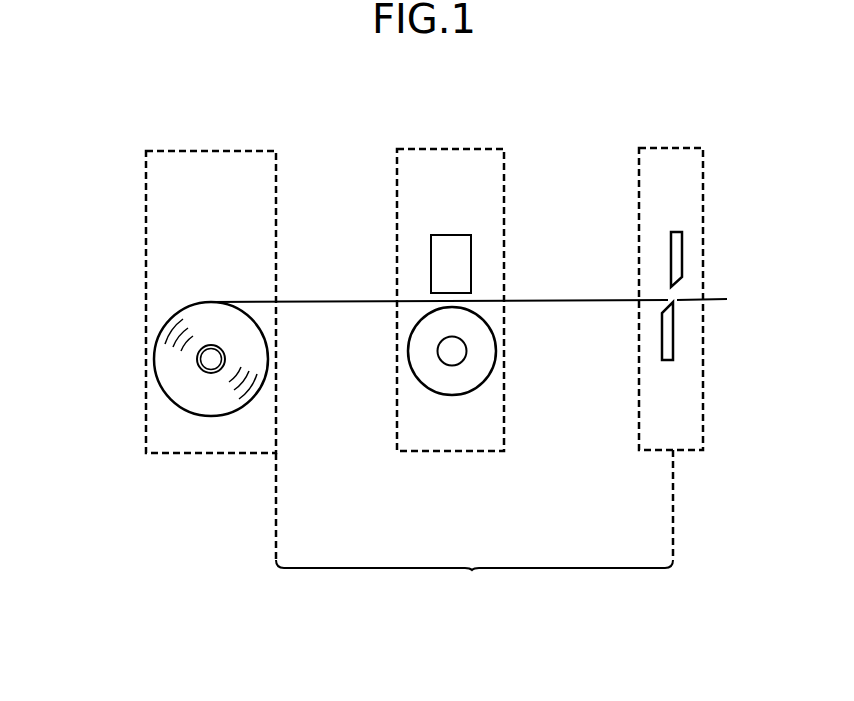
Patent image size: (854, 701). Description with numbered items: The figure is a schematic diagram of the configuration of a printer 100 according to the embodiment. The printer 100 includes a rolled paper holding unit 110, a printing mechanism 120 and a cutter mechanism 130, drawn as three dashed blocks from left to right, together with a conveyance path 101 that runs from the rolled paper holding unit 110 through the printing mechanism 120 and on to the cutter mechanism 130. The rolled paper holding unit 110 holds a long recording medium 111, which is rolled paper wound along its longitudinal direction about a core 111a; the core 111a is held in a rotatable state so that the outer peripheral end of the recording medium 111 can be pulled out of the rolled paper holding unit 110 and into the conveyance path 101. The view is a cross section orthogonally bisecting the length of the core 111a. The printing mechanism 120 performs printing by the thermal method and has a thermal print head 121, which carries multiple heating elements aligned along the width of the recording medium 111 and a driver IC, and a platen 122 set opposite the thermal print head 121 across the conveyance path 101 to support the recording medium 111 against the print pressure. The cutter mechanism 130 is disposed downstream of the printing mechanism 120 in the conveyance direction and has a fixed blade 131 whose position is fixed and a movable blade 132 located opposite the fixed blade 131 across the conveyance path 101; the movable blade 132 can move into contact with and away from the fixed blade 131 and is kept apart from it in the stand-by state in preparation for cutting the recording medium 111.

The printer 100 is at (578, 92).
The conveyance path 101 is at (472, 570).
The rolled paper holding unit 110 is at (209, 151).
The recording medium 111 is at (172, 337).
The core 111a is at (206, 371).
The printing mechanism 120 is at (444, 149).
The thermal print head 121 is at (471, 262).
The platen 122 is at (487, 375).
The cutter mechanism 130 is at (666, 148).
The fixed blade 131 is at (682, 262).
The movable blade 132 is at (673, 335).